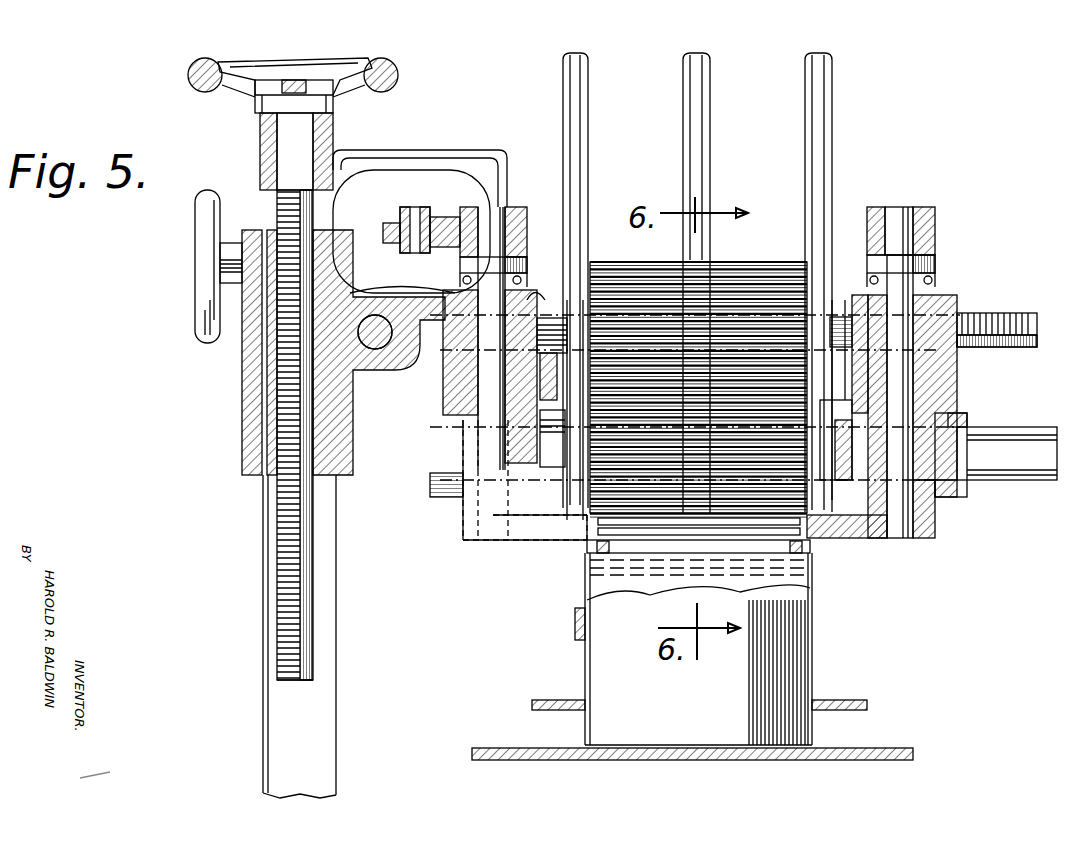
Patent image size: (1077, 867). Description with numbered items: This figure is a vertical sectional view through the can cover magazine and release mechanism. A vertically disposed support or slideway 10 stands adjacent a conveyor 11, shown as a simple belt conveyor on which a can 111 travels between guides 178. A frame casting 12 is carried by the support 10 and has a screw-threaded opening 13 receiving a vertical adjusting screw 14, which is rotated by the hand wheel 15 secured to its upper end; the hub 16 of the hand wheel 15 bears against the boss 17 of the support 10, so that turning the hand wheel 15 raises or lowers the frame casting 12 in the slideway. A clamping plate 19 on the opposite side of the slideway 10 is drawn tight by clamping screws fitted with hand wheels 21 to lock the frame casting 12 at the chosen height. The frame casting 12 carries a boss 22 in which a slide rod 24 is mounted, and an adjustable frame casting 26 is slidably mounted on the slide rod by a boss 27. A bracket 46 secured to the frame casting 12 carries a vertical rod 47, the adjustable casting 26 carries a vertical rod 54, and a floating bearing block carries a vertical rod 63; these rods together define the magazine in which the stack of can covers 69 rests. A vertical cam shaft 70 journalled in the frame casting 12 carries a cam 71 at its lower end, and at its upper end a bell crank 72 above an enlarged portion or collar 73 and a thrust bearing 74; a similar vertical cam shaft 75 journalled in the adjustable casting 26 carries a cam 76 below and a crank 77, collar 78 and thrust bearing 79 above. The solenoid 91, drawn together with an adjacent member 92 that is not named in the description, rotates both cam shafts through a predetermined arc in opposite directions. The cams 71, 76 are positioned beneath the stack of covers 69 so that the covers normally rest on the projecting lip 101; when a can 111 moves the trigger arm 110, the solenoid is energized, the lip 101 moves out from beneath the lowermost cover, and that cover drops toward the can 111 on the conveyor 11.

The vertically disposed support or slideway 10 is at (265, 567).
The conveyor 11 is at (892, 760).
The frame casting 12 is at (380, 478).
The screw-threaded opening 13 is at (315, 500).
The vertical adjusting screw 14 is at (290, 635).
The hand wheel 15 is at (397, 64).
The hub 16 is at (336, 108).
The boss 17 is at (258, 130).
The clamping plate 19 is at (242, 412).
The hand wheel 21 is at (195, 283).
The boss 22 is at (448, 497).
The slide rod 24 is at (1010, 480).
The adjustable frame casting 26 is at (957, 385).
The boss 27 is at (960, 497).
The bracket 46 is at (550, 290).
The vertical rod 47 is at (563, 110).
The vertical rod 54 is at (832, 130).
The vertical rod 63 is at (710, 135).
The stack of can covers 69 is at (762, 268).
The vertical cam shaft 70 is at (470, 207).
The cam 71 is at (520, 545).
The bell crank 72 is at (515, 207).
The enlarged portion or collar 73 is at (527, 265).
The thrust bearing 74 is at (522, 280).
The vertical cam shaft 75 is at (895, 210).
The cam 76 is at (865, 538).
The crank 77 is at (935, 210).
The enlarged portion or collar 78 is at (935, 262).
The thrust bearing 79 is at (935, 282).
The solenoid 91 is at (372, 185).
The bracket 92 is at (425, 150).
The projecting lip 101 is at (590, 548).
The trigger arm 110 is at (575, 633).
The can 111 is at (595, 678).
The guides 178 is at (880, 725).